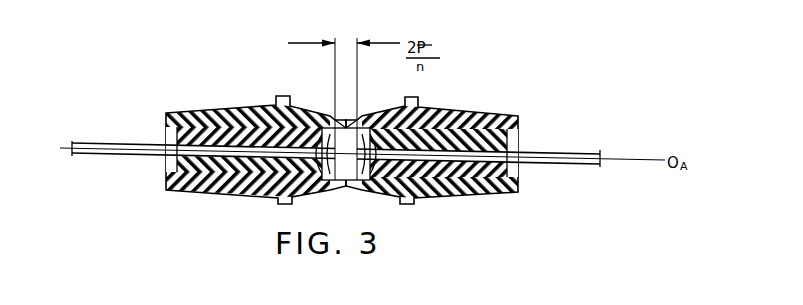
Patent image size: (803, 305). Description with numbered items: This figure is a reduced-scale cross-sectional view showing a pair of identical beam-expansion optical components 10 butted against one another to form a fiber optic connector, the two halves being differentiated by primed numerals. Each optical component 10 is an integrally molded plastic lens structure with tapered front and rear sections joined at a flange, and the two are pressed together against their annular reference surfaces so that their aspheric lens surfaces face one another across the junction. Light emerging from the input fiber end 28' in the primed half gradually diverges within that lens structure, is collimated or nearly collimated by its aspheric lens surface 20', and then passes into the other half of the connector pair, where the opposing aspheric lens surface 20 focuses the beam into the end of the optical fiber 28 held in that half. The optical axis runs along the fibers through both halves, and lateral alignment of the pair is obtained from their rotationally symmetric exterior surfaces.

The optical component 10 is at (243, 96).
The fiber end 28' is at (203, 136).
The optical fiber 28 is at (478, 147).
The aspheric lens surface 20' is at (313, 175).
The aspheric lens surface 20 is at (367, 175).